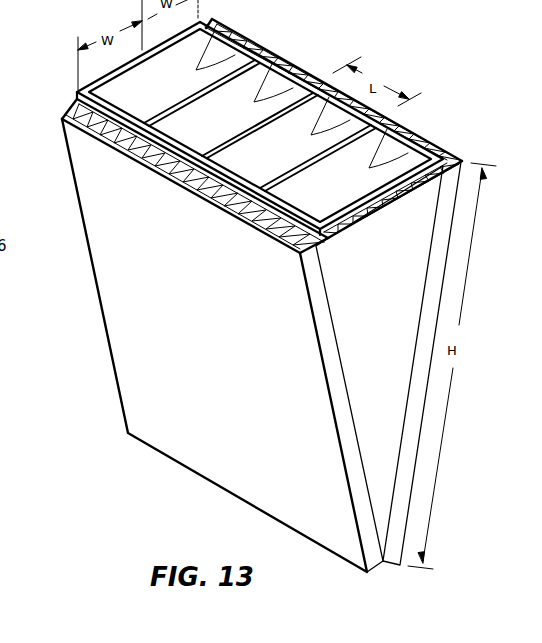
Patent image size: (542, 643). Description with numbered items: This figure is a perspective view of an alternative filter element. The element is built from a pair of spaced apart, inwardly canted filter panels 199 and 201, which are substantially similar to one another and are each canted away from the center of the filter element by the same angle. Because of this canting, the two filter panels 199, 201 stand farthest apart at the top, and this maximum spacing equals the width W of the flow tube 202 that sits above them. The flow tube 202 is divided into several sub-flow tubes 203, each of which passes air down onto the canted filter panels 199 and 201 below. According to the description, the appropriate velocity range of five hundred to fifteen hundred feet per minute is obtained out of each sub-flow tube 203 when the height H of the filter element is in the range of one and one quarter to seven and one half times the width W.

The filter panel 199 is at (430, 362).
The filter panel 201 is at (104, 323).
The flow tube 202 is at (77, 101).
The sub-flow tube 203 is at (235, 42).